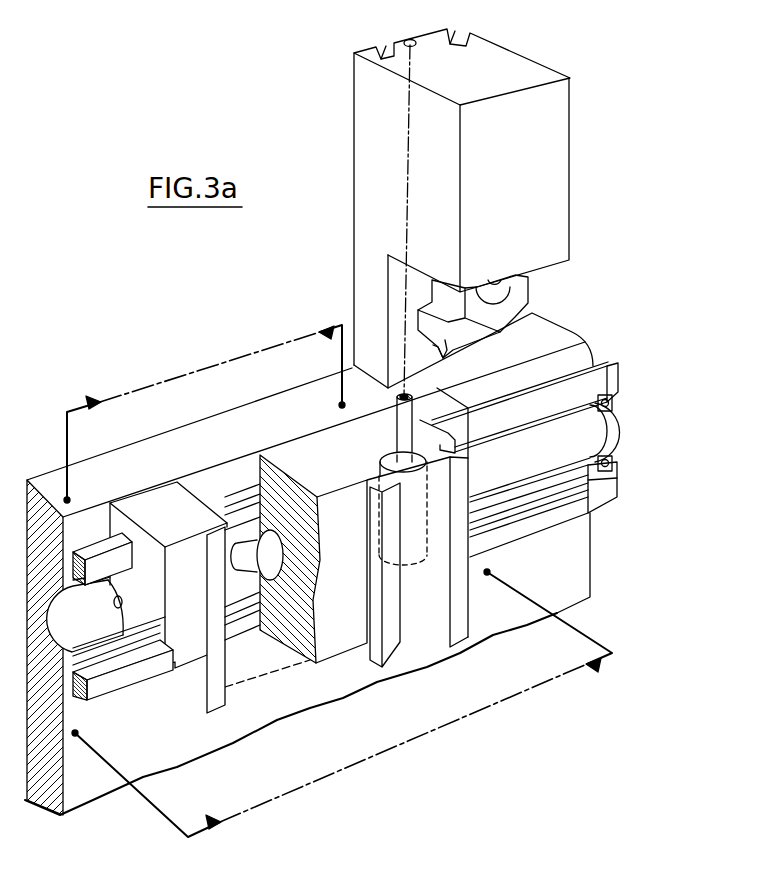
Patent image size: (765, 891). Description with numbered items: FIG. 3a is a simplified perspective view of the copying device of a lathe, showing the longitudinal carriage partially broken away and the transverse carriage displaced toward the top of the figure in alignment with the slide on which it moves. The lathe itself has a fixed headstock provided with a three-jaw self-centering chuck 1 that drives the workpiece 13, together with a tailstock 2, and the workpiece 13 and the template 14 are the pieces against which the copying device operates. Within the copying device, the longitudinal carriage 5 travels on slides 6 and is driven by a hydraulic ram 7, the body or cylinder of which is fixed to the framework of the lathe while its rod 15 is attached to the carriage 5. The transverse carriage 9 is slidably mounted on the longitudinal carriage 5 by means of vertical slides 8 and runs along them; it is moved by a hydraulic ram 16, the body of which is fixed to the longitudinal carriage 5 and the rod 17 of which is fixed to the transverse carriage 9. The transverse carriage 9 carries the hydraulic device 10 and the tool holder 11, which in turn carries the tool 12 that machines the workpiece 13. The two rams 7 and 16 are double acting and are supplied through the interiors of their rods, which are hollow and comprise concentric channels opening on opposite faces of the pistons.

The three-jaw self-centering chuck 1 is at (200, 832).
The tailstock 2 is at (551, 628).
The longitudinal carriage 5 is at (346, 622).
The slides 6 is at (110, 563).
The hydraulic ram 7 is at (272, 540).
The vertical slides 8 is at (460, 610).
The transverse carriage 9 is at (385, 222).
The hydraulic device 10 is at (518, 188).
The tool holder 11 is at (472, 310).
The tool 12 is at (445, 353).
The workpiece 13 is at (387, 752).
The template 14 is at (208, 366).
The rod 15 is at (240, 557).
The hydraulic ram 16 is at (390, 458).
The rod 17 is at (413, 39).